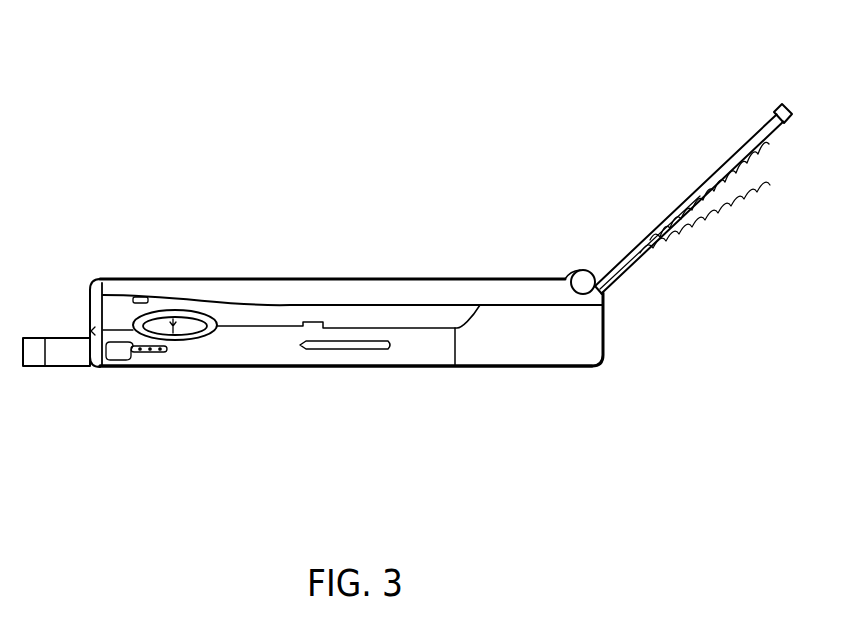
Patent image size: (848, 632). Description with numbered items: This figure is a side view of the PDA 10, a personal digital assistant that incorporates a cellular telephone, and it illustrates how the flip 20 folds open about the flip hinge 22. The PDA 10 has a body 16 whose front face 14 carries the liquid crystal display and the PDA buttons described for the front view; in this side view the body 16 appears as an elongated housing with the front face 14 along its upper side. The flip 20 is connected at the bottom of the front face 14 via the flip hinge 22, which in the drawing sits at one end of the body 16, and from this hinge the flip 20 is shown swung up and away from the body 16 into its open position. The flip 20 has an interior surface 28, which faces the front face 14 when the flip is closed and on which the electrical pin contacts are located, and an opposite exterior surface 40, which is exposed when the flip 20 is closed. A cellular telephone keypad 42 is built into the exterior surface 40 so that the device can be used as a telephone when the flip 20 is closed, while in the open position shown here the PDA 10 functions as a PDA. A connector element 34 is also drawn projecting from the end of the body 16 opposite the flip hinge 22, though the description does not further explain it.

The PDA 10 is at (344, 112).
The front face 14 is at (153, 278).
The body 16 is at (260, 381).
The flip 20 is at (686, 158).
The flip hinge 22 is at (583, 270).
The interior surface 28 is at (757, 128).
The connector plug 34 is at (33, 362).
The exterior surface 40 is at (783, 125).
The cellular telephone keypad 42 is at (685, 238).